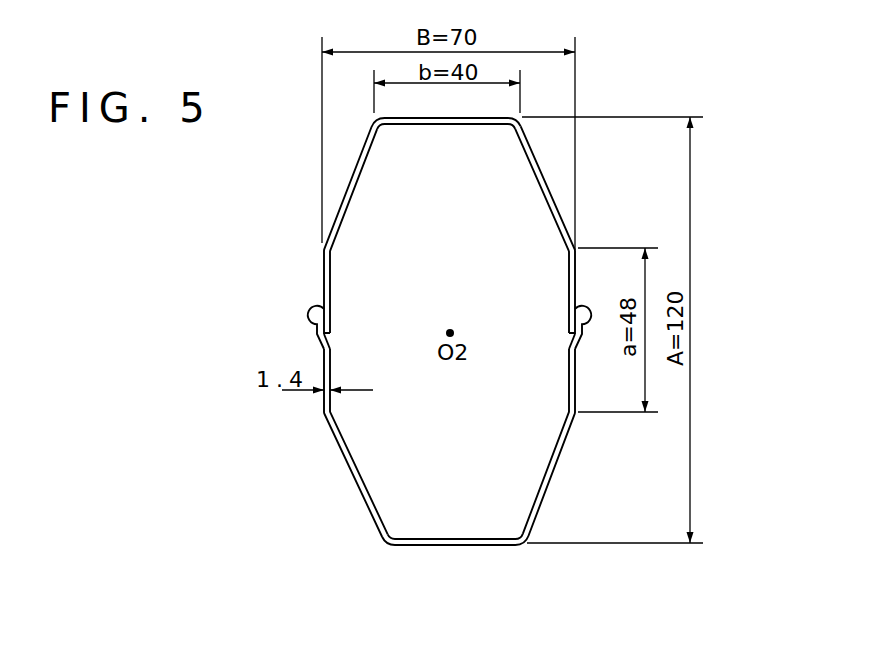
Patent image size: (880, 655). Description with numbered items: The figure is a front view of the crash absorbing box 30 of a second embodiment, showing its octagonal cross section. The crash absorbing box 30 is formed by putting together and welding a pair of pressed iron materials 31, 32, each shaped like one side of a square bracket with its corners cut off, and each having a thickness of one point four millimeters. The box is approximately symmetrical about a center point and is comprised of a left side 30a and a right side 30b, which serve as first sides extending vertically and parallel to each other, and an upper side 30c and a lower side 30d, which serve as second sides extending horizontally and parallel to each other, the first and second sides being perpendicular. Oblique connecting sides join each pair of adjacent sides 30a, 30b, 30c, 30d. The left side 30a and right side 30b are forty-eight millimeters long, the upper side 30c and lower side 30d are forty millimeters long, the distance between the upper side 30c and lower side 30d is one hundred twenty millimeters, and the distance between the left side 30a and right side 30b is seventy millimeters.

The crash absorbing box 30 is at (610, 102).
The left side 30a is at (322, 268).
The right side 30b is at (582, 266).
The upper side 30c is at (420, 118).
The lower side 30d is at (457, 548).
The pressed iron material 31 is at (356, 164).
The pressed iron material 32 is at (343, 453).